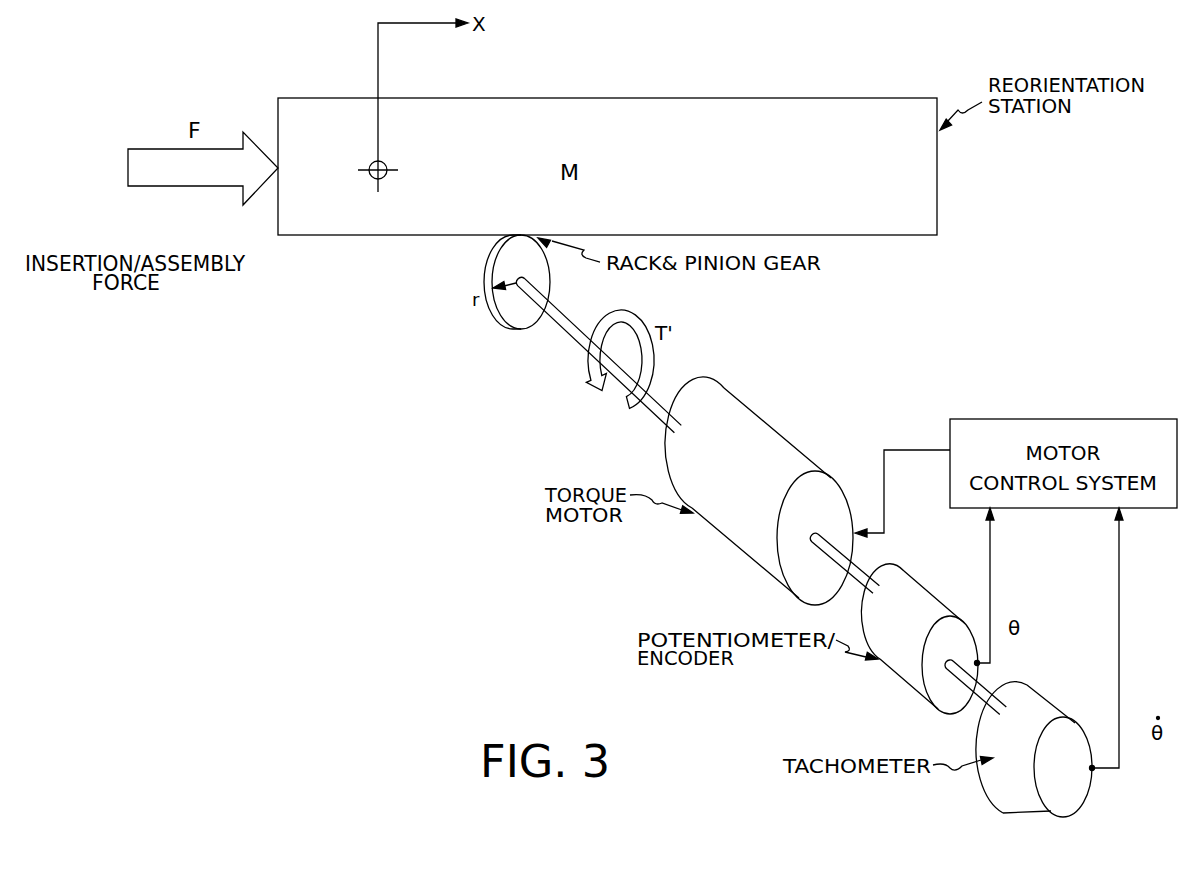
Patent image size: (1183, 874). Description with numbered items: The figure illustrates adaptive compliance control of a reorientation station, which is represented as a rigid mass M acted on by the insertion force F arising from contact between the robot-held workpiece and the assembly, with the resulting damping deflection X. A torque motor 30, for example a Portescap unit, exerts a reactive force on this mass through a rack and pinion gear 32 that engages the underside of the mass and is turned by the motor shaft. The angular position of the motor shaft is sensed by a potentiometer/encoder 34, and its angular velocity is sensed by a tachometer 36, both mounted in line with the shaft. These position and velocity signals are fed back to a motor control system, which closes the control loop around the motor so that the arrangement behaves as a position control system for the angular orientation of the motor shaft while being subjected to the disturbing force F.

The motor 30 is at (753, 478).
The rack and pinion gear 32 is at (466, 280).
The potentiometer/encoder 34 is at (892, 677).
The tachometer 36 is at (990, 737).